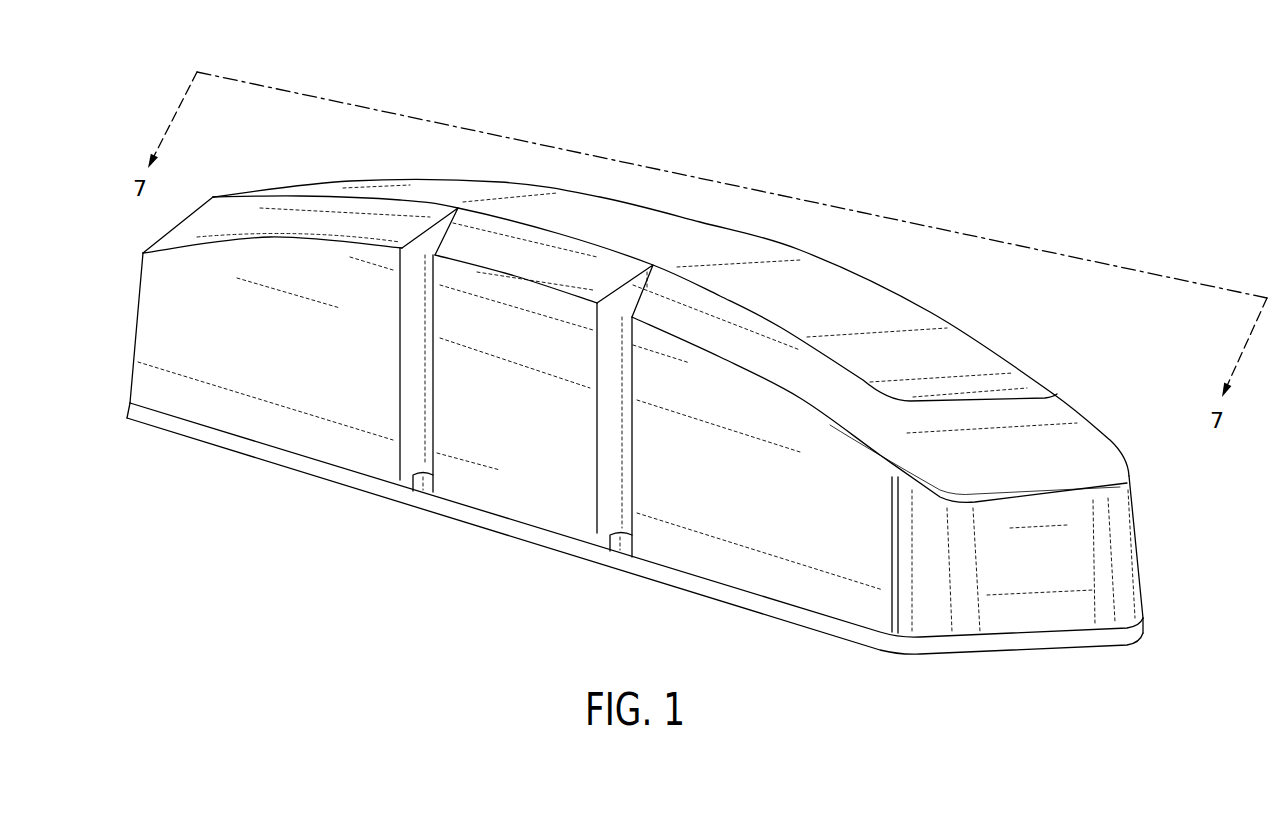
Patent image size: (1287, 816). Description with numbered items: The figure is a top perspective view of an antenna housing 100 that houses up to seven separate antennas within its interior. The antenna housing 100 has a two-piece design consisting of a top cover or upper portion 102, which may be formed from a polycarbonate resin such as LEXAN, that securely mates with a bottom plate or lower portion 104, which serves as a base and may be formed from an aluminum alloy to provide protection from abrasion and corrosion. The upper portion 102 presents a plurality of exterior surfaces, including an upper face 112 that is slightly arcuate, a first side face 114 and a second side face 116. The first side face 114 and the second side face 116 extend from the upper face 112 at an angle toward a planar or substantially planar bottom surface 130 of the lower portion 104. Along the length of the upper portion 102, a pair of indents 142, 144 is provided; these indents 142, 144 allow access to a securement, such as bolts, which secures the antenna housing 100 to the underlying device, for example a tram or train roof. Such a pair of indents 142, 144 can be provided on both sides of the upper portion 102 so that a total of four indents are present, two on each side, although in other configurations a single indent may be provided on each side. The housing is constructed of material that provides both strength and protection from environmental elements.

The antenna housing 100 is at (972, 202).
The upper portion 102 is at (1198, 463).
The lower portion 104 is at (1157, 620).
The upper face 112 is at (897, 312).
The first side face 114 is at (133, 340).
The second side face 116 is at (1072, 547).
The bottom surface 130 is at (720, 598).
The indent 142 is at (413, 442).
The indent 144 is at (608, 502).